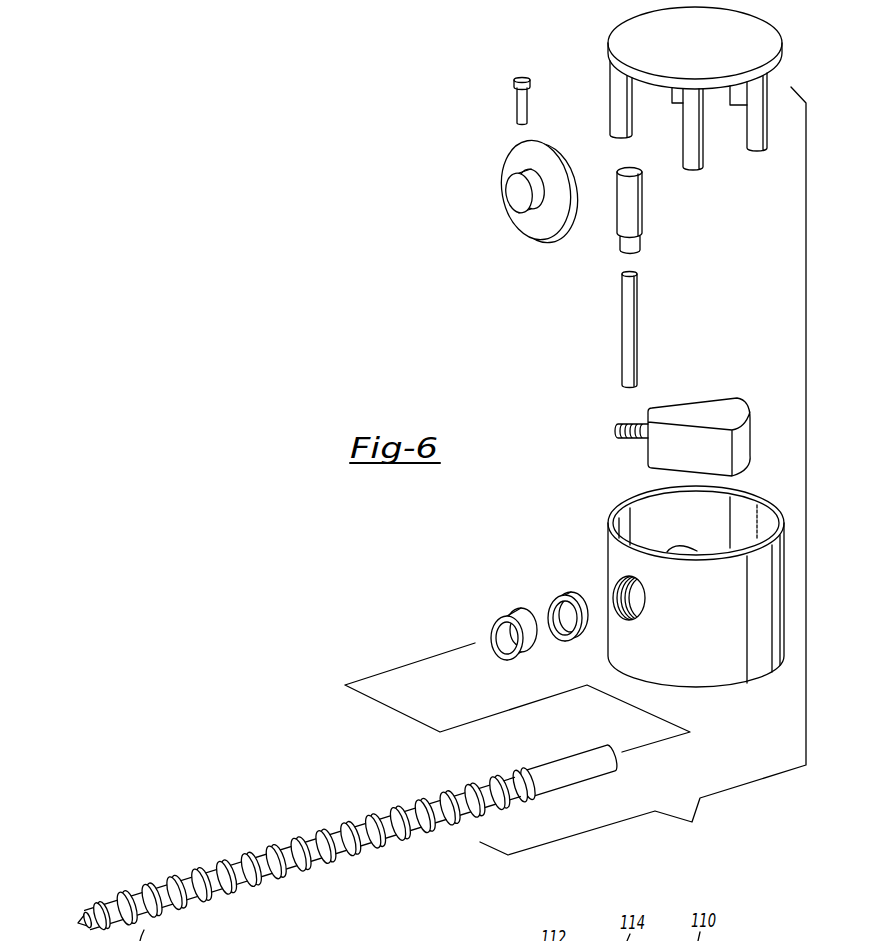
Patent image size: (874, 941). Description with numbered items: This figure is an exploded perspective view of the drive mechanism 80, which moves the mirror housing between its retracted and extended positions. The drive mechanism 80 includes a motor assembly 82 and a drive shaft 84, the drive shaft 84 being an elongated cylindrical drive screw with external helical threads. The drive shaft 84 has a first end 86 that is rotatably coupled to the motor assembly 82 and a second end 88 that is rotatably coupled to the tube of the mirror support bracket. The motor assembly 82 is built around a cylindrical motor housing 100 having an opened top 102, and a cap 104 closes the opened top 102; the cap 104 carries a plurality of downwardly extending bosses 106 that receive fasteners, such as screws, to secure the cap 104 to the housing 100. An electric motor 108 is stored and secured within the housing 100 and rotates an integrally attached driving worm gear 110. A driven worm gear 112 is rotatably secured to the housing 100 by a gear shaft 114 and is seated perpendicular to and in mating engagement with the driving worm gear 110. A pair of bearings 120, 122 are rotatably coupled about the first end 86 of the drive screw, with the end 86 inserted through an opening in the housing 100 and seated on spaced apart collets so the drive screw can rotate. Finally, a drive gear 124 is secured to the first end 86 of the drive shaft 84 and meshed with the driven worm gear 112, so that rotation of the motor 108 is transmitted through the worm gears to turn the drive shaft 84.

The drive mechanism 80 is at (440, 367).
The motor assembly 82 is at (598, 522).
The drive shaft 84 is at (274, 845).
The first end 86 is at (613, 746).
The second end 88 is at (78, 924).
The motor housing 100 is at (706, 581).
The opened top 102 is at (752, 492).
The cap 104 is at (612, 40).
The bosses 106 is at (611, 97).
The electric motor 108 is at (690, 400).
The driving worm gear 110 is at (619, 429).
The driven worm gear 112 is at (642, 204).
The gear shaft 114 is at (640, 308).
The bearing 120 is at (502, 622).
The bearing 122 is at (553, 602).
The drive gear 124 is at (543, 226).